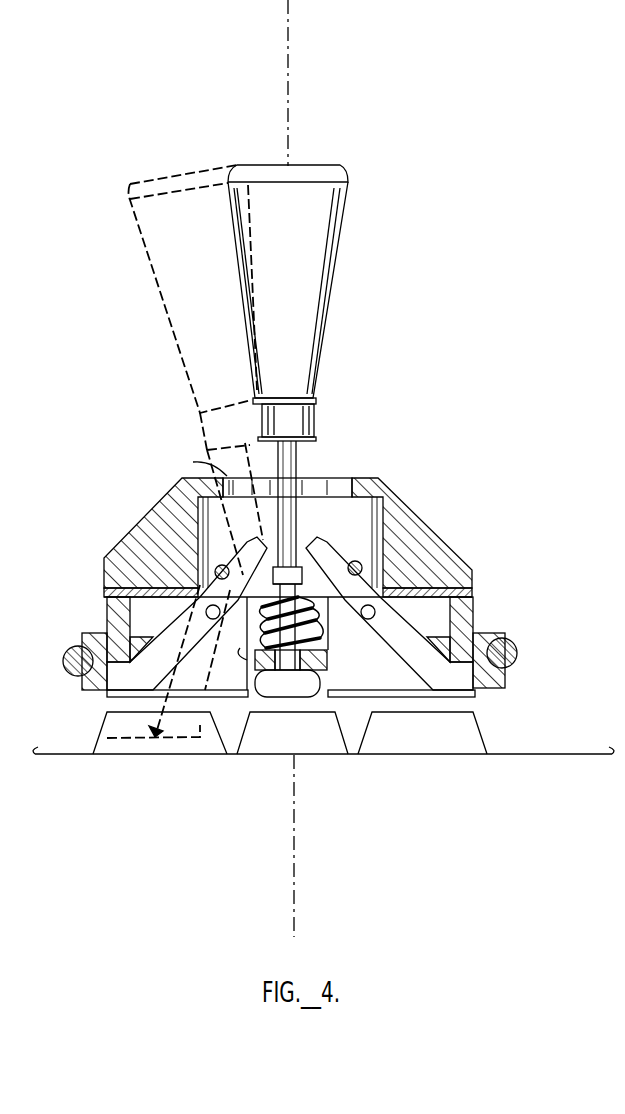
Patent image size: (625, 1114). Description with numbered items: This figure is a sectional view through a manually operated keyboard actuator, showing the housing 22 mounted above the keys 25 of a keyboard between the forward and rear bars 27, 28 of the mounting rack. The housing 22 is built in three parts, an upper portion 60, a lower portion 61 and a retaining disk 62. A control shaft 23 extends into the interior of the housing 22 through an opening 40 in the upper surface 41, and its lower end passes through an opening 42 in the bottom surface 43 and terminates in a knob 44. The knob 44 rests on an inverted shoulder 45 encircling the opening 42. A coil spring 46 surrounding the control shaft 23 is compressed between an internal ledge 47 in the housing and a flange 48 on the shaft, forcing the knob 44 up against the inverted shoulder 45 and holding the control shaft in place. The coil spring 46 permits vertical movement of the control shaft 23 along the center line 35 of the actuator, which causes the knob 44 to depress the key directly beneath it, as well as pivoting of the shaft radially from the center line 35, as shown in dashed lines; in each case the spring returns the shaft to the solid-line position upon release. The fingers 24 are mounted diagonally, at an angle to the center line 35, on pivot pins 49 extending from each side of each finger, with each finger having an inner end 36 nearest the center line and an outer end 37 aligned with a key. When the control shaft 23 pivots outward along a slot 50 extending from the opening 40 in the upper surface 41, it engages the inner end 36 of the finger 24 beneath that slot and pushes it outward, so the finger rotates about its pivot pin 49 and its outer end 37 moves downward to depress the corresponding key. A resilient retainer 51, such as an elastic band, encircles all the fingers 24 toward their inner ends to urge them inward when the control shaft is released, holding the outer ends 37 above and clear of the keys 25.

The housing 22 is at (477, 515).
The control shaft 23 is at (300, 456).
The fingers 24 is at (157, 634).
The keys 25 is at (482, 737).
The forward bar 27 is at (68, 670).
The rear bar 28 is at (518, 650).
The center line 35 is at (288, 22).
The inner end 36 is at (313, 543).
The outer end 37 is at (475, 697).
The opening 40 is at (300, 475).
The upper surface 41 is at (368, 477).
The opening 42 is at (305, 654).
The bottom surface 43 is at (248, 693).
The knob 44 is at (273, 697).
The inverted shoulder 45 is at (322, 674).
The coil spring 46 is at (318, 618).
The internal ledge 47 is at (243, 645).
The flange 48 is at (303, 588).
The pivot pins 49 is at (206, 612).
The slot 50 is at (201, 463).
The resilient retainer 51 is at (361, 566).
The upper portion 60 is at (137, 527).
The lower portion 61 is at (106, 636).
The retaining disk 62 is at (103, 590).